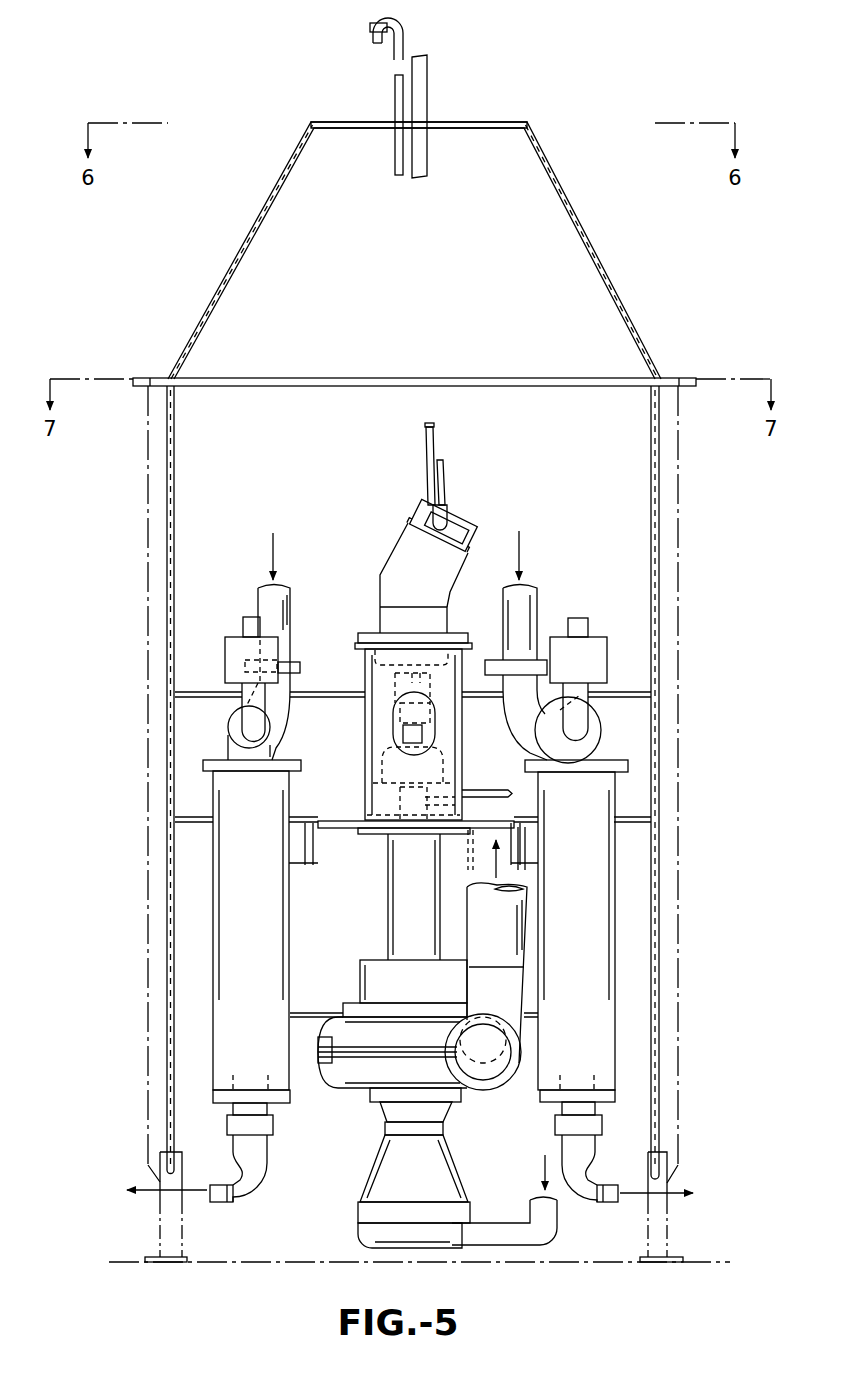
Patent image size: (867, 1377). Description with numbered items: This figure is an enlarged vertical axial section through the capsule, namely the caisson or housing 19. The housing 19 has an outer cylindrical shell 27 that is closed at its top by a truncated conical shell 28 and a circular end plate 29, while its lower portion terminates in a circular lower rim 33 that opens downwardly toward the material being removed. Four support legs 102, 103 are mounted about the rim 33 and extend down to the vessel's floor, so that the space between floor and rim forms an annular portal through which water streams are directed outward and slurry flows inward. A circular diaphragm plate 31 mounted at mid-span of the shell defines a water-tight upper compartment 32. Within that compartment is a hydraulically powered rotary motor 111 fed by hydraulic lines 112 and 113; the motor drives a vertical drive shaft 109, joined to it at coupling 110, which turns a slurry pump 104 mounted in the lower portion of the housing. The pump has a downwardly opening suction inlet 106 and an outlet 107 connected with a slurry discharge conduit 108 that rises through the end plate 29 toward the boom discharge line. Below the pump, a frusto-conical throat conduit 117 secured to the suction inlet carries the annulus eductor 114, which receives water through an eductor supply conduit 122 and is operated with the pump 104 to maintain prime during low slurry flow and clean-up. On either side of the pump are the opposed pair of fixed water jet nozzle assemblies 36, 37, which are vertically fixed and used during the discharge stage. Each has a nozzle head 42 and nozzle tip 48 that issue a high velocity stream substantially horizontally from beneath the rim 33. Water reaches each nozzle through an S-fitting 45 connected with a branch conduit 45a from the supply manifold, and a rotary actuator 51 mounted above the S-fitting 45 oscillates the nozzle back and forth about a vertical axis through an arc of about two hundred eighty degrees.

The caisson or housing 19 is at (399, 198).
The truncated conical shell 28 is at (591, 247).
The circular end plate 29 is at (465, 121).
The outer cylindrical shell 27 is at (660, 540).
The water-tight upper compartment 32 is at (292, 473).
The circular diaphragm plate 31 is at (327, 692).
The rotary motor 111 is at (403, 540).
The hydraulic line 112 is at (424, 432).
The hydraulic line 113 is at (446, 480).
The coupling 110 is at (395, 710).
The vertical drive shaft 109 is at (363, 803).
The branch conduit 45a is at (280, 607).
The rotary actuator 51 is at (228, 648).
The S-fitting 45 is at (241, 744).
The fixed nozzle assembly 36 is at (289, 906).
The fixed nozzle assembly 37 is at (618, 911).
The nozzle head 42 is at (263, 1158).
The nozzle tip 48 is at (219, 1187).
The circular lower rim 33 is at (667, 1183).
The slurry pump 104 is at (352, 1075).
The outlet 107 is at (446, 1038).
The slurry discharge conduit 108 is at (501, 991).
The suction inlet 106 is at (463, 1090).
The frusto-conical throat conduit 117 is at (446, 1172).
The annulus eductor 114 is at (357, 1235).
The eductor supply conduit 122 is at (518, 1198).
The support leg 102 is at (156, 1249).
The support leg 103 is at (668, 1245).